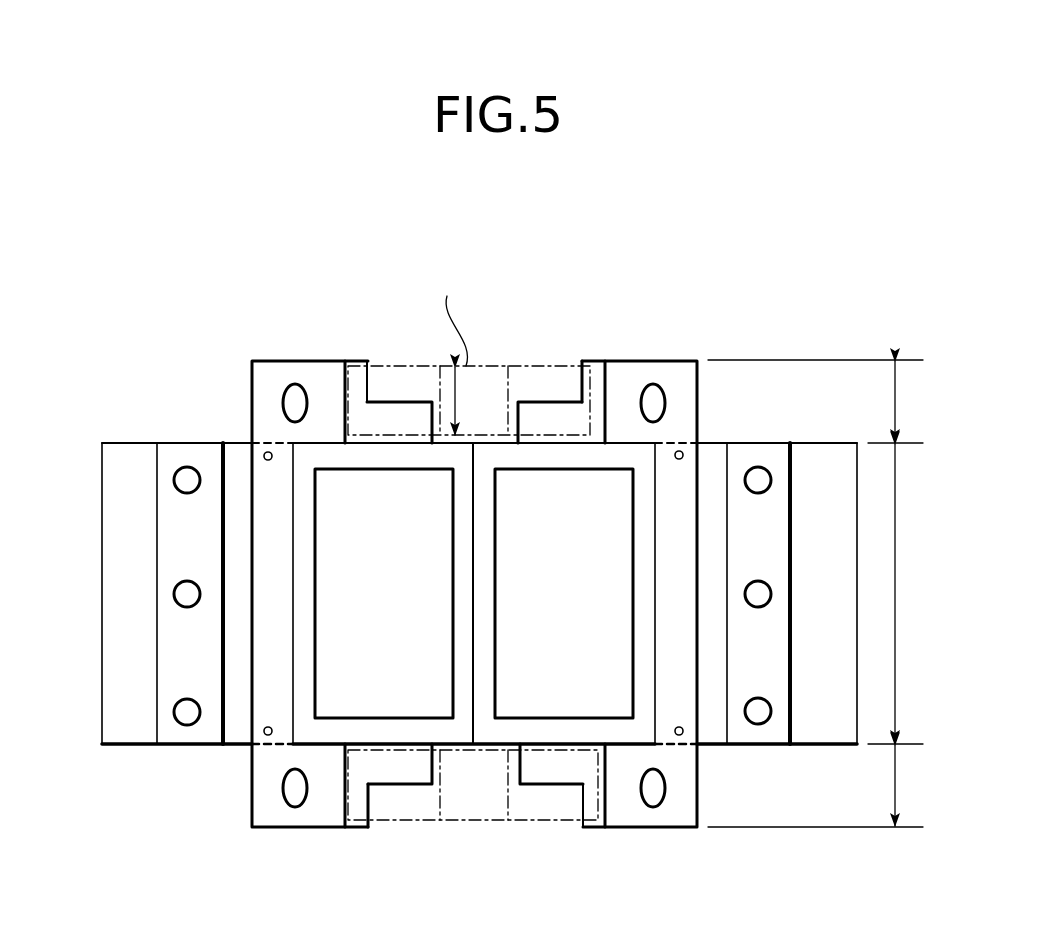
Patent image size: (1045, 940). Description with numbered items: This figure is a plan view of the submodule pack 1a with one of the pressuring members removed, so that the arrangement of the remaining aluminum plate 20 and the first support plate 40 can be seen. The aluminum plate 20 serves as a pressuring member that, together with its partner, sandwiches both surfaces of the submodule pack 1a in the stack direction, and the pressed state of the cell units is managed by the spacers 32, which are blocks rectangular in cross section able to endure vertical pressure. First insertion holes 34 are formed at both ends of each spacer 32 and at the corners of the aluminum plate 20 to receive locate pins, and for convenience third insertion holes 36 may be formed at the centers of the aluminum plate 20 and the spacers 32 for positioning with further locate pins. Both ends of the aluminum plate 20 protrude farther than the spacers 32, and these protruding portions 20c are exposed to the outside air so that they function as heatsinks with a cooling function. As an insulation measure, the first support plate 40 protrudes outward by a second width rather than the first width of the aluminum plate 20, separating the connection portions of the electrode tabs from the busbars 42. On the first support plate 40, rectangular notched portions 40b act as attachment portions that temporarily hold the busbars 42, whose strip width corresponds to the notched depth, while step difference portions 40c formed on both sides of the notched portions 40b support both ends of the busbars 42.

The submodule pack 1a is at (832, 310).
The aluminum plate 20 is at (814, 507).
The protruding portion 20c is at (118, 728).
The spacer 32 is at (165, 463).
The first insertion hole 34 is at (187, 480).
The third insertion hole 36 is at (185, 595).
The first support plate 40 is at (683, 361).
The notched portion 40b is at (493, 443).
The step difference portion 40c is at (362, 361).
The busbar 42 is at (531, 383).